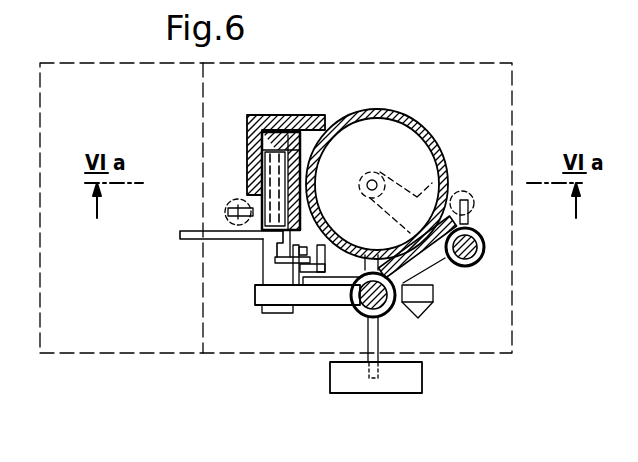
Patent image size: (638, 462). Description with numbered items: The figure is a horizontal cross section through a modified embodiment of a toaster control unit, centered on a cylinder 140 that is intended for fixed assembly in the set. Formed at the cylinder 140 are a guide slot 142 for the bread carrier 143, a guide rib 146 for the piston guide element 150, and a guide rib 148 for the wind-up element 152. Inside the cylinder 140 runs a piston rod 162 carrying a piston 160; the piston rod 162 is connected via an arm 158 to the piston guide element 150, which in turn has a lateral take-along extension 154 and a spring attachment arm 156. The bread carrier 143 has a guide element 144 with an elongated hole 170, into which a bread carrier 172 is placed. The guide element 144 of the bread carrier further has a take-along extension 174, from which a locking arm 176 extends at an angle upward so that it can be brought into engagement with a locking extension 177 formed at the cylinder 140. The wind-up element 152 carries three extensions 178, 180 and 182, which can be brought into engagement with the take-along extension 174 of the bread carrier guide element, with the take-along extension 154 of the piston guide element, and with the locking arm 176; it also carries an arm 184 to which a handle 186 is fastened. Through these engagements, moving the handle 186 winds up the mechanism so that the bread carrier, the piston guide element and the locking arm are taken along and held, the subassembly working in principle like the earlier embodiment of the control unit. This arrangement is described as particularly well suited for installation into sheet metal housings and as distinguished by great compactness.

The cylinder 140 is at (417, 136).
The guide slot 142 is at (291, 115).
The bread carrier 143 is at (212, 228).
The guide element 144 is at (250, 151).
The guide rib 146 is at (484, 252).
The guide rib 148 is at (402, 322).
The piston guide element 150 is at (478, 230).
The wind-up element 152 is at (358, 318).
The lateral take-along extension 154 is at (452, 282).
The spring attachment arm 156 is at (471, 199).
The arm 158 is at (445, 178).
The piston 160 is at (376, 119).
The piston rod 162 is at (375, 172).
The elongated hole 170 is at (252, 165).
The bread carrier 172 is at (186, 231).
The take-along extension 174 is at (263, 290).
The locking arm 176 is at (268, 253).
The locking extension 177 is at (327, 244).
The extension 178 is at (270, 302).
The extension 180 is at (442, 305).
The extension 182 is at (297, 275).
The arm 184 is at (378, 340).
The handle 186 is at (392, 386).